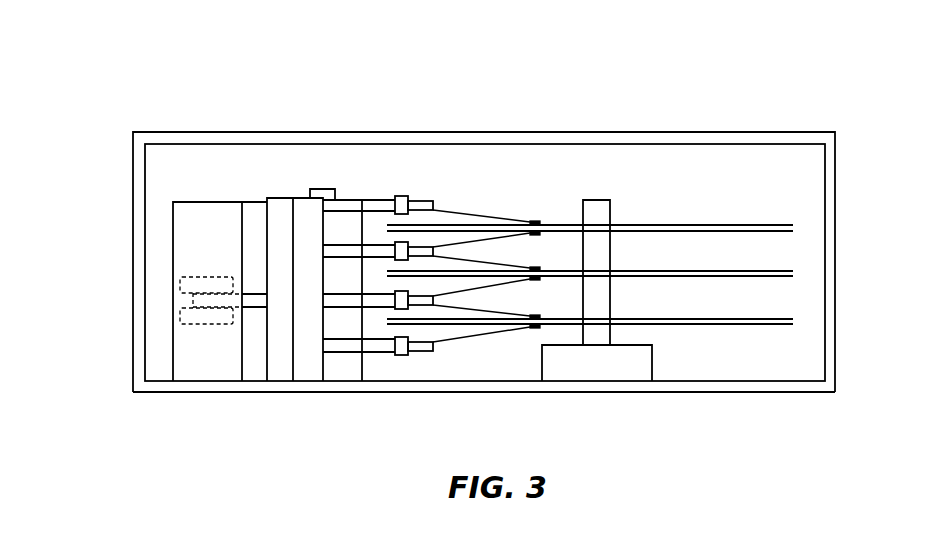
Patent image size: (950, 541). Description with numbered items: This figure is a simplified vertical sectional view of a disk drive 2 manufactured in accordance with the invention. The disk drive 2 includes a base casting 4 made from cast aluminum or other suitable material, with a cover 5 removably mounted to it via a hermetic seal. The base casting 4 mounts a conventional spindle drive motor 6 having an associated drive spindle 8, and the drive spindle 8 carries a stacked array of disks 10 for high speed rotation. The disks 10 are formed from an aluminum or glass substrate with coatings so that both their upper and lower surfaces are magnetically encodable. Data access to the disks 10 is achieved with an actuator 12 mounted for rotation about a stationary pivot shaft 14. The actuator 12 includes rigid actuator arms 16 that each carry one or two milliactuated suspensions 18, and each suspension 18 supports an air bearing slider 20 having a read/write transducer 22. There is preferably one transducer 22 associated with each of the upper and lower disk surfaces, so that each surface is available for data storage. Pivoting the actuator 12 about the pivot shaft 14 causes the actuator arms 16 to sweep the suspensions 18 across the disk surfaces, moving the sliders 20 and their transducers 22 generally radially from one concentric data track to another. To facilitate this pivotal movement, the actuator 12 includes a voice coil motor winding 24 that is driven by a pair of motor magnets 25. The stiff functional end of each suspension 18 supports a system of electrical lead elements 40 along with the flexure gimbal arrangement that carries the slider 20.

The disk drive 2 is at (125, 68).
The base casting 4 is at (372, 392).
The cover 5 is at (233, 131).
The spindle drive motor 6 is at (654, 365).
The drive spindle 8 is at (612, 210).
The disks 10 is at (716, 224).
The actuator 12 is at (283, 375).
The stationary pivot shaft 14 is at (313, 189).
The actuator arms 16 is at (380, 199).
The milliactuated suspensions 18 is at (472, 195).
The air bearing slider 20 is at (532, 208).
The read/write transducer 22 is at (538, 221).
The voice coil motor winding 24 is at (193, 298).
The motor magnets 25 is at (233, 282).
The electrical lead elements 40 is at (404, 195).